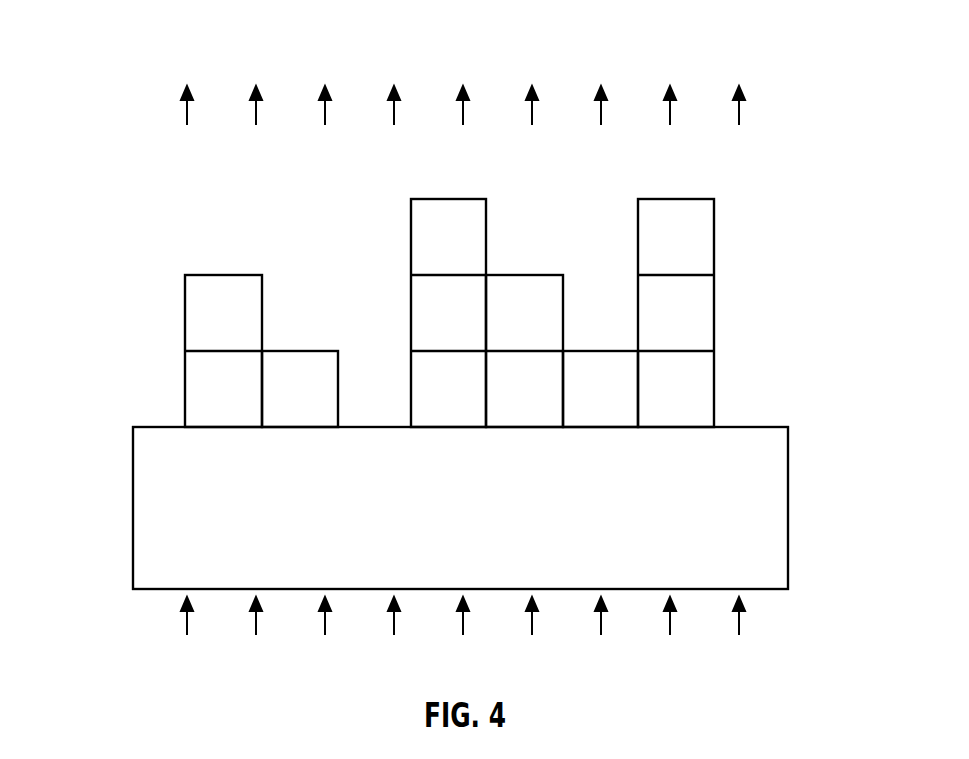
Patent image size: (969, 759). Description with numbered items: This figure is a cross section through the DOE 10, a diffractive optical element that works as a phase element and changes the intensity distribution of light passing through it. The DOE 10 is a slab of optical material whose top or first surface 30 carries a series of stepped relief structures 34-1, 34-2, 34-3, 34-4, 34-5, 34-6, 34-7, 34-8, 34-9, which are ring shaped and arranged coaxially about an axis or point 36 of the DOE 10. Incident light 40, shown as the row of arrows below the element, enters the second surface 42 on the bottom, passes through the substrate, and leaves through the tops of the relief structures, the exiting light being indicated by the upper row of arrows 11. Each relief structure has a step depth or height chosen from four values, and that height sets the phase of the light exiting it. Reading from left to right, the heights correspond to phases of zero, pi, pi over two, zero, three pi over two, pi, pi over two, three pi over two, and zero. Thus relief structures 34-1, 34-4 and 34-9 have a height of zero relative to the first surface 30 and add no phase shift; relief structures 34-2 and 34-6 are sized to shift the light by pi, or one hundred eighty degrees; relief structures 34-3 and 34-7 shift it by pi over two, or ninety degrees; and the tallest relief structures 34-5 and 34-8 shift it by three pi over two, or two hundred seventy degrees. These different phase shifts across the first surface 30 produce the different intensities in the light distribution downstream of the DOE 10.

The DOE 10 is at (836, 418).
The output light 11 is at (205, 58).
The first surface 30 is at (143, 427).
The axis or point 36 is at (133, 523).
The incident light 40 is at (286, 642).
The second surface 42 is at (770, 589).
The relief structure 34-1 is at (134, 351).
The relief structure 34-2 is at (164, 257).
The relief structure 34-3 is at (295, 284).
The relief structure 34-4 is at (367, 329).
The relief structure 34-5 is at (417, 183).
The relief structure 34-6 is at (521, 216).
The relief structure 34-7 is at (596, 261).
The relief structure 34-8 is at (729, 169).
The relief structure 34-9 is at (768, 339).